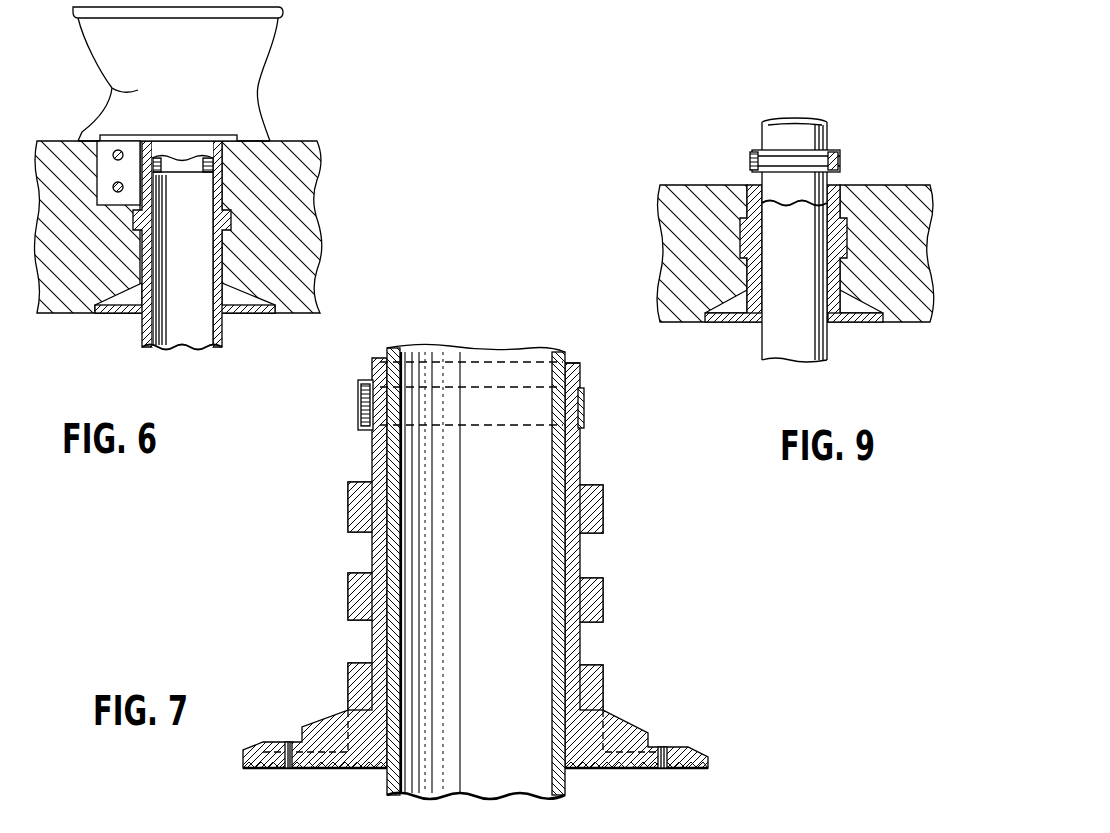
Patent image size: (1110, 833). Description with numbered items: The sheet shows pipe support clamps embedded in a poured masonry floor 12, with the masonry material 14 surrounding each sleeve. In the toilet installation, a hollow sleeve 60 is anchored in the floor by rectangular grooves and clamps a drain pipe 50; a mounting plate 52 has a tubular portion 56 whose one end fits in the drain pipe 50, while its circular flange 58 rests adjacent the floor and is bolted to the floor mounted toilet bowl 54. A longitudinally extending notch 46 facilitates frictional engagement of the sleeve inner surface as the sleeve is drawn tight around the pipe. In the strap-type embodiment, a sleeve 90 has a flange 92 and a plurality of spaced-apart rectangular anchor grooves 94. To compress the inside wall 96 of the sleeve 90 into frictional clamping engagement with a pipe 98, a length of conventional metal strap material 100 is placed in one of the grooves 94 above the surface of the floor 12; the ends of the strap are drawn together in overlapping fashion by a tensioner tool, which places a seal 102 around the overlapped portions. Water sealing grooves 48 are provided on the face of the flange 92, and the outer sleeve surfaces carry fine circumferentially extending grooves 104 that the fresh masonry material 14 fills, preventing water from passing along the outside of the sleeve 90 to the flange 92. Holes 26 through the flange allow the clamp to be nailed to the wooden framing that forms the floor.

In FIG. 9, the masonry floor 12 is at (685, 185).
In FIG. 6, the masonry material 14 is at (293, 150).
In FIG. 9, the masonry material 14 is at (888, 190).
In FIG. 7, the holes 26 is at (288, 770).
In FIG. 7, the longitudinally extending notch 46 is at (383, 593).
In FIG. 7, the water sealing grooves 48 is at (338, 770).
In FIG. 6, the drain pipe 50 is at (202, 325).
In FIG. 6, the mounting plate 52 is at (142, 138).
In FIG. 6, the toilet bowl 54 is at (250, 50).
In FIG. 6, the tubular portion 56 is at (190, 163).
In FIG. 6, the circular flange 58 is at (232, 130).
In FIG. 6, the hollow sleeve 60 is at (226, 258).
In FIG. 9, the sleeve 90 is at (740, 262).
In FIG. 7, the sleeve 90 is at (595, 513).
In FIG. 9, the flange 92 is at (740, 322).
In FIG. 7, the flange 92 is at (618, 768).
In FIG. 7, the anchor grooves 94 is at (372, 551).
In FIG. 7, the inside wall 96 is at (575, 382).
In FIG. 9, the pipe 98 is at (815, 138).
In FIG. 7, the pipe 98 is at (565, 780).
In FIG. 9, the metal strap material 100 is at (840, 162).
In FIG. 7, the metal strap material 100 is at (584, 408).
In FIG. 9, the seal 102 is at (750, 165).
In FIG. 7, the seal 102 is at (358, 410).
In FIG. 7, the fine circumferentially extending grooves 104 is at (348, 680).